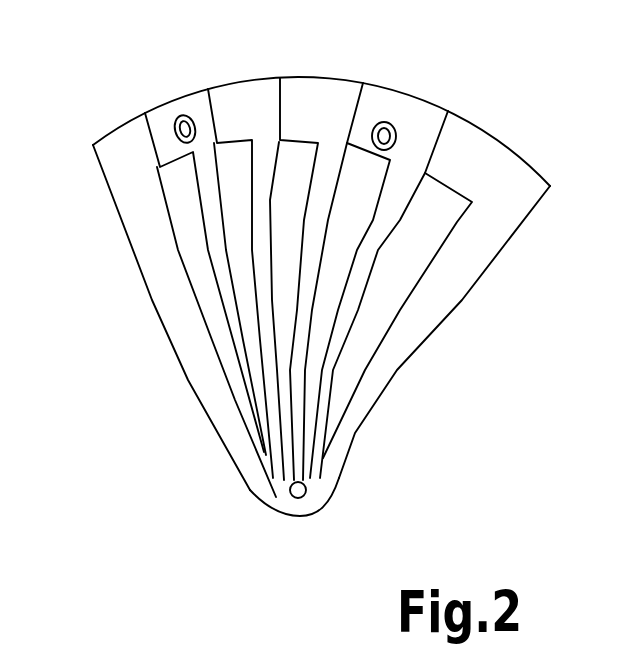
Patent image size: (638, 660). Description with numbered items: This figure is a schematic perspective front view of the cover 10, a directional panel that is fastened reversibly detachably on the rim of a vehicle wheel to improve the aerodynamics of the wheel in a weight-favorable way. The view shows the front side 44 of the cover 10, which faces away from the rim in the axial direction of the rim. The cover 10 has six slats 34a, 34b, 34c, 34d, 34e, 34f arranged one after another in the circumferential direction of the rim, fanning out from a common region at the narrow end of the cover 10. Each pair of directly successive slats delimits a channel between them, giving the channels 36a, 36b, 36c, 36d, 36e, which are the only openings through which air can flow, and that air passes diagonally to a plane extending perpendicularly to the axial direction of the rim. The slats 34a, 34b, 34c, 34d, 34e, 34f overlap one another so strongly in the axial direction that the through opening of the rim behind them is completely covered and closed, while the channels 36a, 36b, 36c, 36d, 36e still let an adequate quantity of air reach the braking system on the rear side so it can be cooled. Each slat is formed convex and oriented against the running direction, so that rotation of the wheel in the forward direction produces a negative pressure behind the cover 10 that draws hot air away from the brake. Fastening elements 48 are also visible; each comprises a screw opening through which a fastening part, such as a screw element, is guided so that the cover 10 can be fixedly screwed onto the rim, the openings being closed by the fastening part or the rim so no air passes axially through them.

The cover 10 is at (522, 158).
The slat 34a is at (427, 300).
The slat 34b is at (355, 170).
The slat 34c is at (298, 167).
The slat 34d is at (232, 167).
The slat 34e is at (177, 180).
The slat 34f is at (113, 167).
The channel 36a is at (330, 458).
The channel 36b is at (312, 460).
The channel 36c is at (295, 457).
The channel 36d is at (268, 447).
The channel 36e is at (243, 423).
The front side 44 is at (395, 360).
The fastening element 48 is at (186, 114).